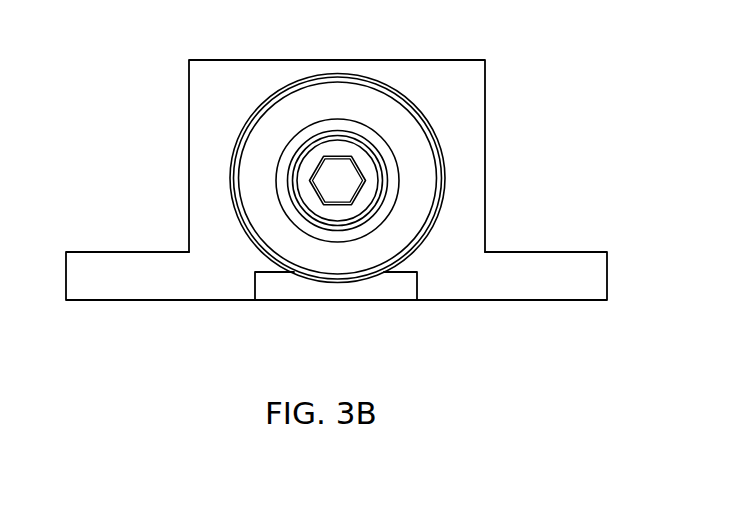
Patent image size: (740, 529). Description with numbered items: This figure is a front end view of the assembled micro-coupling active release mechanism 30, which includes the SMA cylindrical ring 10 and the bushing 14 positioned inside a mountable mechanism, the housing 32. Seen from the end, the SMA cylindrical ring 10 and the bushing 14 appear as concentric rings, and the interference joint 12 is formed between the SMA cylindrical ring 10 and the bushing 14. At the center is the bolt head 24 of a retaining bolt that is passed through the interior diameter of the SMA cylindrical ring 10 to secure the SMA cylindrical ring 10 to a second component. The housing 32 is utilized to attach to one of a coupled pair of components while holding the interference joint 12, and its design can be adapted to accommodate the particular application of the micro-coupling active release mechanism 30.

The SMA cylindrical ring 10 is at (366, 222).
The interference joint 12 is at (343, 104).
The bushing 14 is at (286, 158).
The bolt head 24 is at (331, 196).
The micro-coupling active release mechanism 30 is at (386, 156).
The housing 32 is at (565, 260).